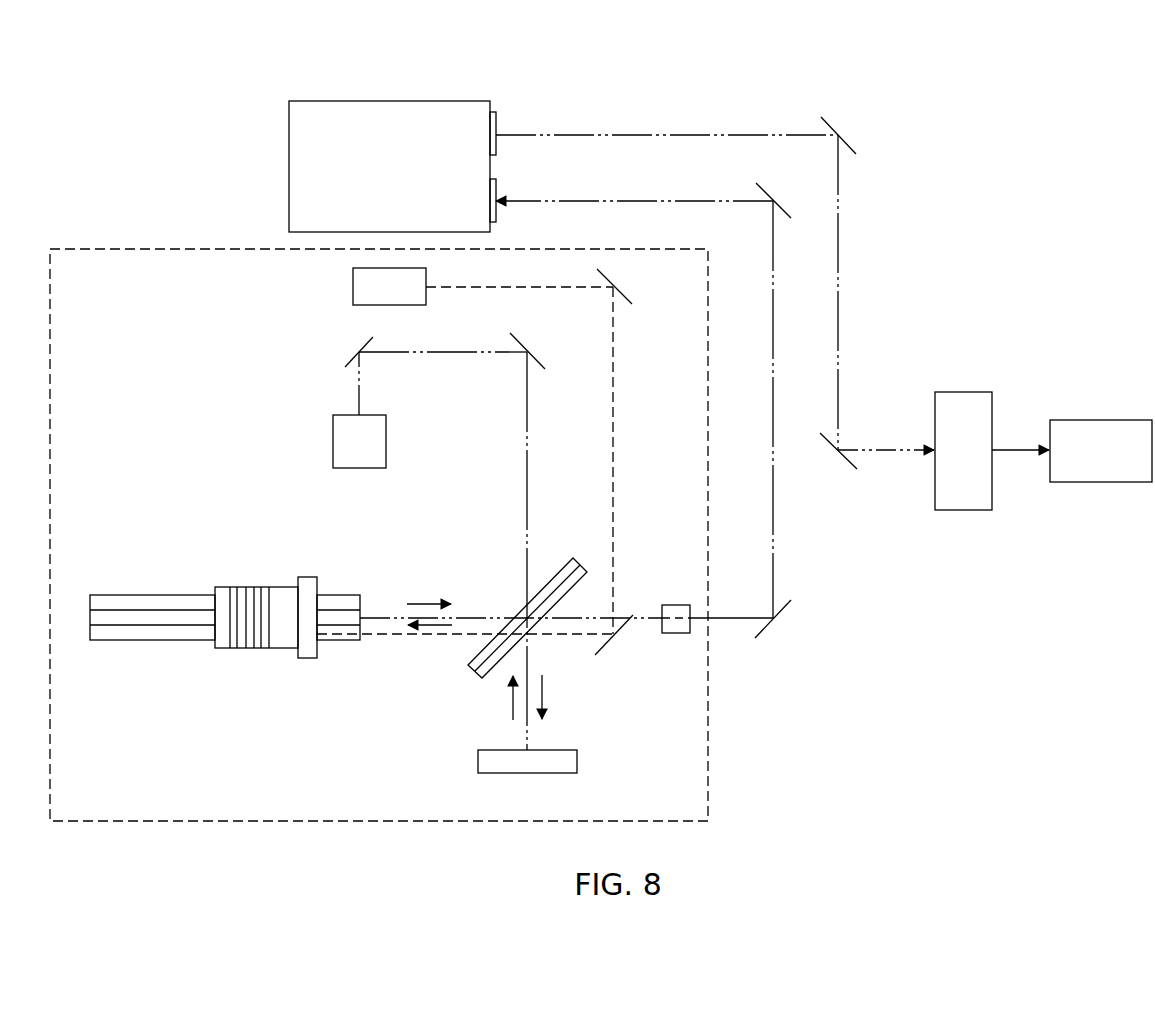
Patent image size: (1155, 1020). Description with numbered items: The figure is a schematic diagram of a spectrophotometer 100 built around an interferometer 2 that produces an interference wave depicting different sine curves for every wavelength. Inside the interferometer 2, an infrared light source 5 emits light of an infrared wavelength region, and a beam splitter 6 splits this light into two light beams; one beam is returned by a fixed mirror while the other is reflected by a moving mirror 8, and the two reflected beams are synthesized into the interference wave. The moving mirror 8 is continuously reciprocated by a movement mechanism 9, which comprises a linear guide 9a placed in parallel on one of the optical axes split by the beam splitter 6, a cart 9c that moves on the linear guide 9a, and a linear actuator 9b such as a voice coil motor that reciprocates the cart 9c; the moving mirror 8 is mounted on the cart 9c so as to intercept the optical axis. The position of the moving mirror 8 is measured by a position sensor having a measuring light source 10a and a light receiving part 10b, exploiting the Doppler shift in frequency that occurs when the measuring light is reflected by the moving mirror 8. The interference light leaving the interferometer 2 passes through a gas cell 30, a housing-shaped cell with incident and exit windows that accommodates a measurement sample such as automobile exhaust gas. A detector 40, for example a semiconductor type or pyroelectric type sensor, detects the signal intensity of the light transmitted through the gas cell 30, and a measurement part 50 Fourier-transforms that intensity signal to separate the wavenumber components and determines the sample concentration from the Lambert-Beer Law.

The spectrophotometer 100 is at (1042, 153).
The interferometer 2 is at (112, 249).
The gas cell 30 is at (388, 101).
The detector 40 is at (962, 392).
The measurement part 50 is at (1100, 420).
The measuring light source 10a is at (352, 286).
The light receiving part 10b is at (677, 633).
The infrared light source 5 is at (333, 442).
The beam splitter 6 is at (558, 567).
The moving mirror 8 is at (307, 577).
The movement mechanism 9 is at (127, 578).
The linear guide 9a is at (152, 640).
The linear actuator 9b is at (250, 648).
The cart 9c is at (283, 648).